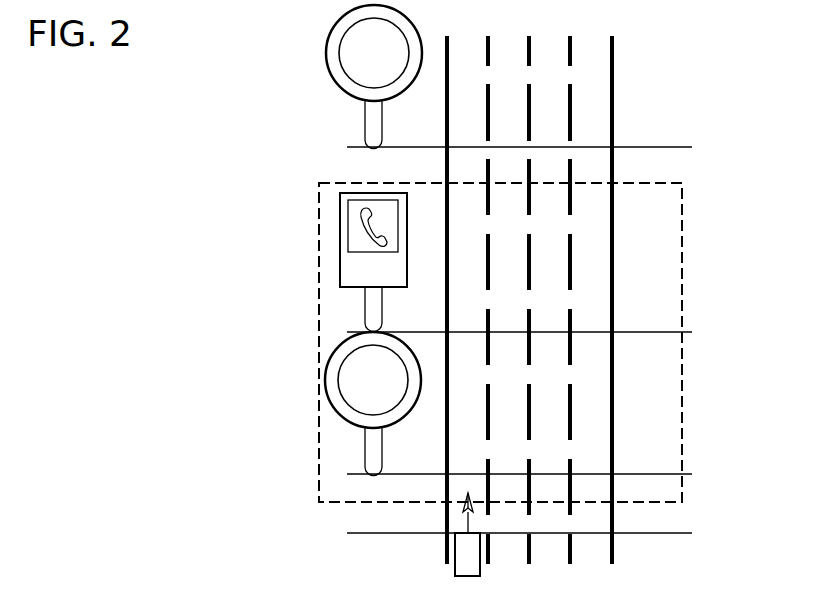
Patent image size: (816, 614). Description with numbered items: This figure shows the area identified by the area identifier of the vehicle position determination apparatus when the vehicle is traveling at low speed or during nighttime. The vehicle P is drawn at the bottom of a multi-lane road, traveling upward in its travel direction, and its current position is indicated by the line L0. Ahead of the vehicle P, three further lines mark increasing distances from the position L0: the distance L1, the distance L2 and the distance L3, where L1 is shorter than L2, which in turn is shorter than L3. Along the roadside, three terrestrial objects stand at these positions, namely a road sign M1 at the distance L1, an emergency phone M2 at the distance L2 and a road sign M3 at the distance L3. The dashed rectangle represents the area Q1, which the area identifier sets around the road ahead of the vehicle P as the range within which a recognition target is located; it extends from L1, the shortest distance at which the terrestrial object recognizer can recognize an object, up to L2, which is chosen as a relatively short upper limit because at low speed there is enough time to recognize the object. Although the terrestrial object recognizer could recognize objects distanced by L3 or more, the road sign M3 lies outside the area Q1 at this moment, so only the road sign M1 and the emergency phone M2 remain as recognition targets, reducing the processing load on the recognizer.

The road sign M3 is at (330, 52).
The emergency phone M2 is at (340, 238).
The road sign M1 is at (328, 372).
The vehicle P is at (458, 560).
The area Q1 is at (682, 237).
The distance L3 is at (538, 151).
The distance L2 is at (538, 334).
The distance L1 is at (538, 479).
The position of the vehicle L0 is at (538, 538).